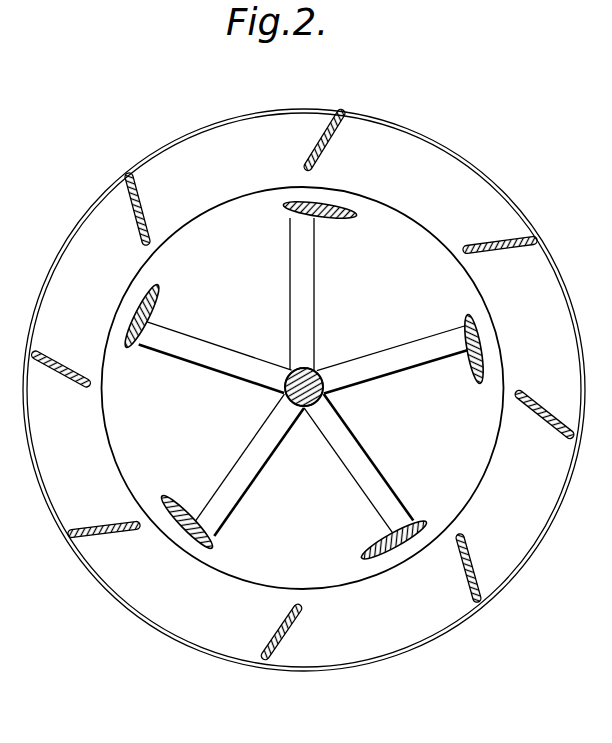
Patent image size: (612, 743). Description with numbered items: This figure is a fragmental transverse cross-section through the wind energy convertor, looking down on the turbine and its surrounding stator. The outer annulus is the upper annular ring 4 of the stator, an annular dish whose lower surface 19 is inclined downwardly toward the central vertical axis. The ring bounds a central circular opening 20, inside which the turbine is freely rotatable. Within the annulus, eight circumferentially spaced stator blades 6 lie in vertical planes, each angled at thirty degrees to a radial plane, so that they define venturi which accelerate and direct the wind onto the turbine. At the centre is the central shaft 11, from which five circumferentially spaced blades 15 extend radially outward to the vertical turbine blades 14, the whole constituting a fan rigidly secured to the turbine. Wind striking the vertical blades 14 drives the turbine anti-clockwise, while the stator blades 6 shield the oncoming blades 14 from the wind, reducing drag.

The upper annular ring 4 is at (464, 157).
The lower surface 19 is at (190, 155).
The central circular opening 20 is at (447, 246).
The stator blades 6 is at (65, 367).
The central shaft 11 is at (314, 372).
The vertical turbine blades 14 is at (155, 305).
The radial turbine blades 15 is at (413, 355).